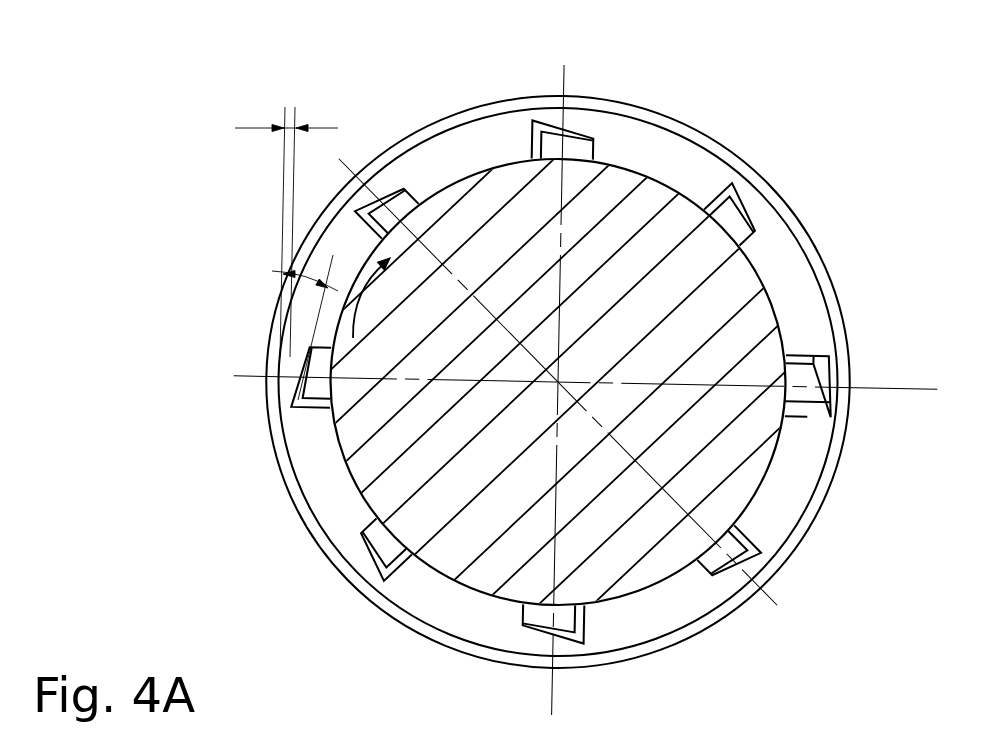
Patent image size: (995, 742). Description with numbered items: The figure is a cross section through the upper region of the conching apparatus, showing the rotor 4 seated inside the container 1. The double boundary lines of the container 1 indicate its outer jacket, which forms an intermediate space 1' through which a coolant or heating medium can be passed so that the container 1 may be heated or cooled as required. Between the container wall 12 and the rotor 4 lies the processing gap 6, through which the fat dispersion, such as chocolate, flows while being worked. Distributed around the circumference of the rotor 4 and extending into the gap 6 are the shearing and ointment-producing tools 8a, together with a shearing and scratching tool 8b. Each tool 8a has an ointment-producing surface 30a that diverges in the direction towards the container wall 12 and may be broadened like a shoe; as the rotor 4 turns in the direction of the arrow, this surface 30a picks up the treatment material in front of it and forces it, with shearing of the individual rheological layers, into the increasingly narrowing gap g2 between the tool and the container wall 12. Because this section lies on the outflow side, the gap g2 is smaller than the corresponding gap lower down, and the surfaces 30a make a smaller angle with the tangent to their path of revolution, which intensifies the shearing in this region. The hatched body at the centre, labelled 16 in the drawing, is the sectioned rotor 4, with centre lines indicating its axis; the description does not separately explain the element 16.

The container 1 is at (574, 381).
The intermediate space 1' is at (544, 382).
The rotor 4 is at (650, 548).
The processing gap 6 is at (628, 618).
The shearing and ointment-producing tools 8a is at (588, 152).
The shearing and scratching tools 8b is at (808, 379).
The container wall 12 is at (476, 648).
The shaft 16 is at (437, 580).
The ointment-producing surface 30a is at (355, 556).
The gap g2 is at (285, 220).